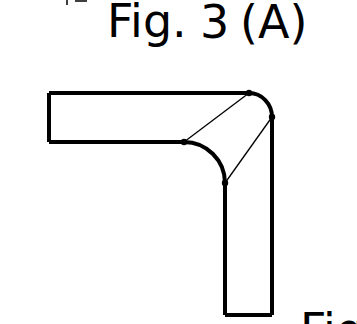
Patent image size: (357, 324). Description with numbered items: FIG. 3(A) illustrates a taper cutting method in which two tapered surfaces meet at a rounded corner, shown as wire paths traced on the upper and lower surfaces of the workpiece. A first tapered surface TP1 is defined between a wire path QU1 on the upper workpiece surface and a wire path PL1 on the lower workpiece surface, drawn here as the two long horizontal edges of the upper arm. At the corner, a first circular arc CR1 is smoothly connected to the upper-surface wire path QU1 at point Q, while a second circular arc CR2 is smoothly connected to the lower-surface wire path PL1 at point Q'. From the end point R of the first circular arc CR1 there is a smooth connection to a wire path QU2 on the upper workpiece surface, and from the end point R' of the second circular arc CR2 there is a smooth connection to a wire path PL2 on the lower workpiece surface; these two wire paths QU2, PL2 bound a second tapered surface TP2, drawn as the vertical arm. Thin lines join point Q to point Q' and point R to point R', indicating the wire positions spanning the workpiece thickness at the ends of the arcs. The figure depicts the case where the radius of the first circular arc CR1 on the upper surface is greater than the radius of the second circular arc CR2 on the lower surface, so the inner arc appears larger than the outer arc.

The wire path PL1 is at (172, 91).
The first tapered surface TP1 is at (100, 144).
The wire path QU1 is at (152, 144).
The first circular arc CR1 is at (204, 152).
The point Q is at (179, 153).
The end point R is at (216, 180).
The point Q' is at (250, 81).
The end point R' is at (284, 118).
The second circular arc CR2 is at (266, 100).
The wire path PL2 is at (275, 228).
The wire path QU2 is at (223, 238).
The second tapered surface TP2 is at (225, 277).